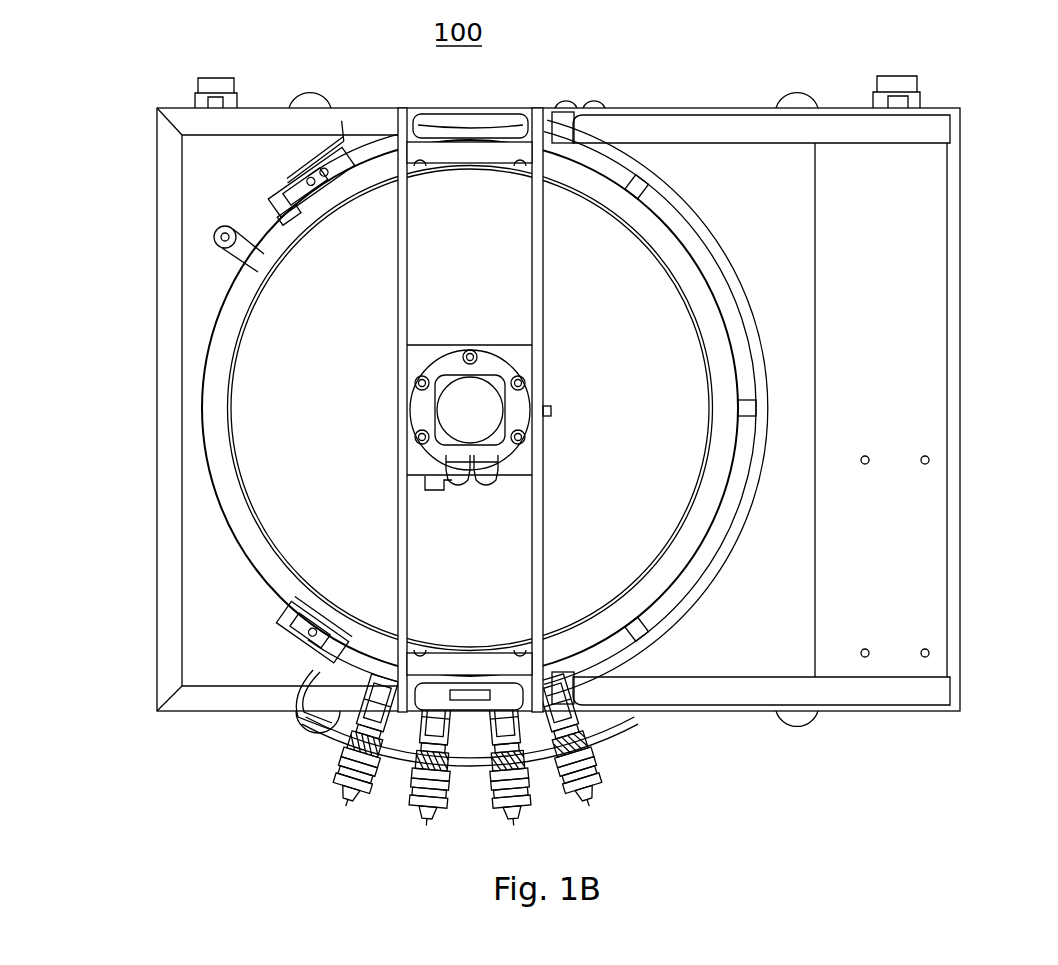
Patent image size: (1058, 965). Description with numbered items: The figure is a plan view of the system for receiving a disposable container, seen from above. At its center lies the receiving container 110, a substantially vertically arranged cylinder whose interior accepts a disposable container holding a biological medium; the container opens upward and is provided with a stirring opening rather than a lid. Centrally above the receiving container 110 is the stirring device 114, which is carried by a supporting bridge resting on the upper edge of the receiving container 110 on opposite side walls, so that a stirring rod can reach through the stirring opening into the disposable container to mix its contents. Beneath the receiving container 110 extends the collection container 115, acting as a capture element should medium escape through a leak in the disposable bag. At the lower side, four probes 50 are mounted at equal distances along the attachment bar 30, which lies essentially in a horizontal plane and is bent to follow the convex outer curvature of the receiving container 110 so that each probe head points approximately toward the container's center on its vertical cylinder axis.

The receiving container 110 is at (675, 257).
The stirring device 114 is at (493, 414).
The collection container 115 is at (163, 600).
The attachment bar 30 is at (312, 709).
The probes 50 is at (346, 801).